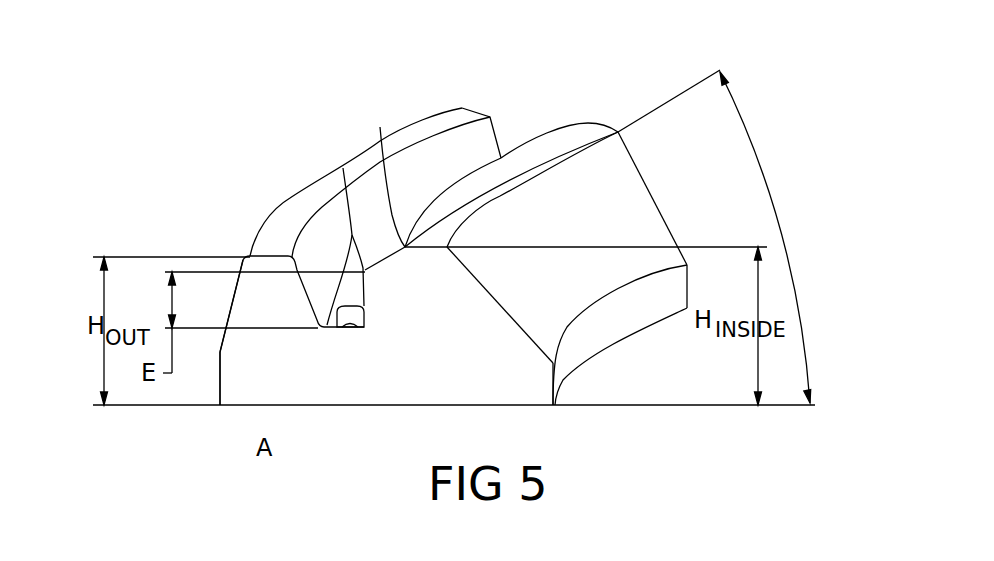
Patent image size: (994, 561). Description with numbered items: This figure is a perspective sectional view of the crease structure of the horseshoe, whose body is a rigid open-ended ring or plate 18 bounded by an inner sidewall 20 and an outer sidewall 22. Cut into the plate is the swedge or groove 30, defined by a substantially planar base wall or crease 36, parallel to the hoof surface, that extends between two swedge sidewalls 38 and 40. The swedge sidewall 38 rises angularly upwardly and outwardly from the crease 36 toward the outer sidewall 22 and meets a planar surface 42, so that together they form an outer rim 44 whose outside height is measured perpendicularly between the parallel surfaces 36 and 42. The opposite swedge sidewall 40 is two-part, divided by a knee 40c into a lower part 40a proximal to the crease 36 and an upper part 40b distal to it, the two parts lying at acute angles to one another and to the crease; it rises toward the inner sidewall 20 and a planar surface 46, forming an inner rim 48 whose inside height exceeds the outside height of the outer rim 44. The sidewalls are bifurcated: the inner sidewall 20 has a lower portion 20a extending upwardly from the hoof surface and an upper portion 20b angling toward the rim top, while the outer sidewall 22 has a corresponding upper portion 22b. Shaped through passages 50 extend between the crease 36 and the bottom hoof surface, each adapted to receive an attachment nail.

The open-ended ring or plate 18 is at (232, 398).
The inner sidewall 20 is at (647, 320).
The lower portion of inner sidewall 20a is at (570, 353).
The upper portion of inner sidewall 20b is at (658, 232).
The outer sidewall 22 is at (206, 387).
The upper portion of outer sidewall 22b is at (229, 312).
The swedge or groove 30 is at (543, 100).
The base wall or crease 36 is at (367, 307).
The swedge sidewall 38 is at (315, 244).
The swedge sidewall 40 is at (575, 110).
The lower part of swedge sidewall 40a is at (335, 327).
The upper part of swedge sidewall 40b is at (380, 127).
The knee 40c is at (343, 168).
The planar surface 42 is at (443, 110).
The outer rim 44 is at (256, 203).
The planar surface 46 is at (588, 130).
The inner rim 48 is at (657, 197).
The through passages 50 is at (353, 290).